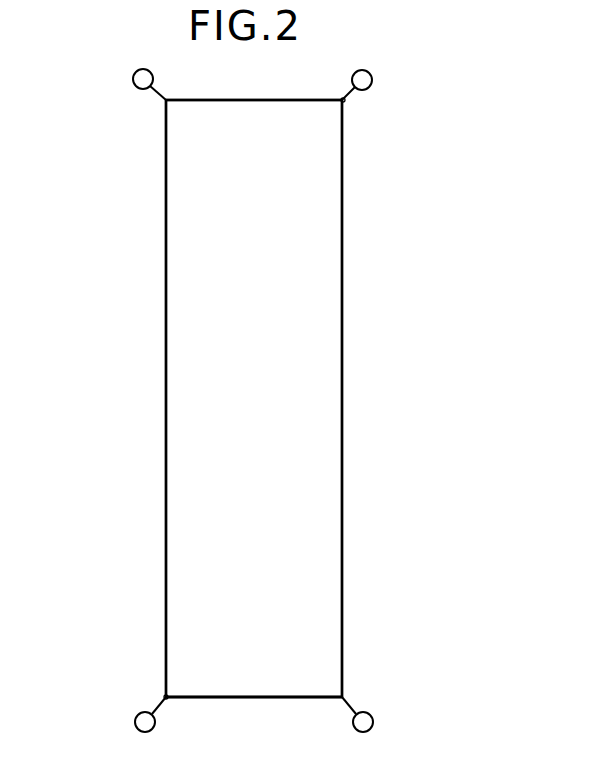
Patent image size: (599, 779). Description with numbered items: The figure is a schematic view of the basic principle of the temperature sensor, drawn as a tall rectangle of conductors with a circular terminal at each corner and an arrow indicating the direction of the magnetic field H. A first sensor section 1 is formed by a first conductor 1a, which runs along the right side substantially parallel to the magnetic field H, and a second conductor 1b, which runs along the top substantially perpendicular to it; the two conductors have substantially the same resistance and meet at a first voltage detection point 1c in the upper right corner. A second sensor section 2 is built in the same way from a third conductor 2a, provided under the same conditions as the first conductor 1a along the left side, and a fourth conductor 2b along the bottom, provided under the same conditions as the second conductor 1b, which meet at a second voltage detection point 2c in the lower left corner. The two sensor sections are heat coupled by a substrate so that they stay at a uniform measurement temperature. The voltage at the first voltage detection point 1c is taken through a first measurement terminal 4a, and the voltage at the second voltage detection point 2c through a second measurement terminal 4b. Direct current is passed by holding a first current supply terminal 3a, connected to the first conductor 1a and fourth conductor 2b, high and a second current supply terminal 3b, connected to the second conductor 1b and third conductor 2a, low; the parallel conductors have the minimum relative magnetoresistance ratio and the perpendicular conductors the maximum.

The first sensor section 1 is at (266, 130).
The first conductor 1a is at (341, 187).
The second conductor 1b is at (297, 100).
The first voltage detection point 1c is at (345, 103).
The second sensor section 2 is at (272, 619).
The third conductor 2a is at (167, 625).
The fourth conductor 2b is at (261, 697).
The second voltage detection point 2c is at (170, 700).
The first current supply terminal 3a is at (373, 722).
The second current supply terminal 3b is at (133, 79).
The first measurement terminal 4a is at (372, 80).
The second measurement terminal 4b is at (135, 723).
The magnetic field H is at (65, 647).